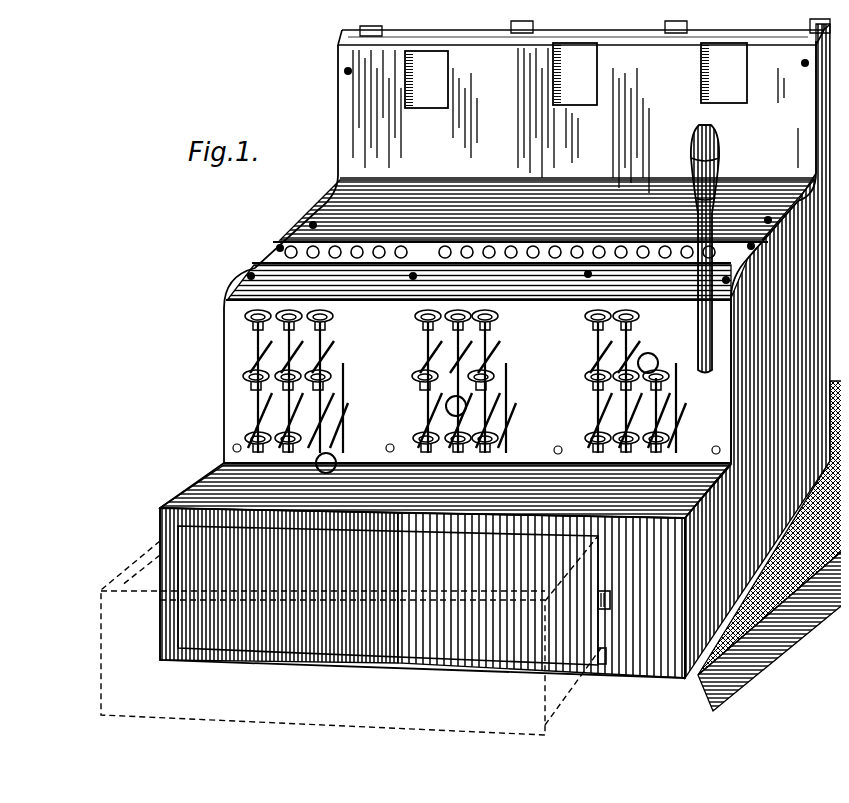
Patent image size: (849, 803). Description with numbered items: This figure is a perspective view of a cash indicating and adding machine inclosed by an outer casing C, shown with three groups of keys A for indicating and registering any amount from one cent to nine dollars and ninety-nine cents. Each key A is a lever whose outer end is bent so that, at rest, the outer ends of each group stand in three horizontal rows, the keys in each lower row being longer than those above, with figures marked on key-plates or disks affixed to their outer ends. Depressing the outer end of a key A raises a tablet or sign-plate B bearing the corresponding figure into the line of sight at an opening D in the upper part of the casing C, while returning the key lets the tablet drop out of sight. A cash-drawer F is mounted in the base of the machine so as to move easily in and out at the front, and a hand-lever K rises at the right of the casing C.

The key A is at (318, 313).
The tablet or sign-plate B is at (440, 63).
The casing C is at (500, 365).
The opening D is at (418, 100).
The operating handle K is at (711, 148).
The cash-drawer F is at (355, 630).